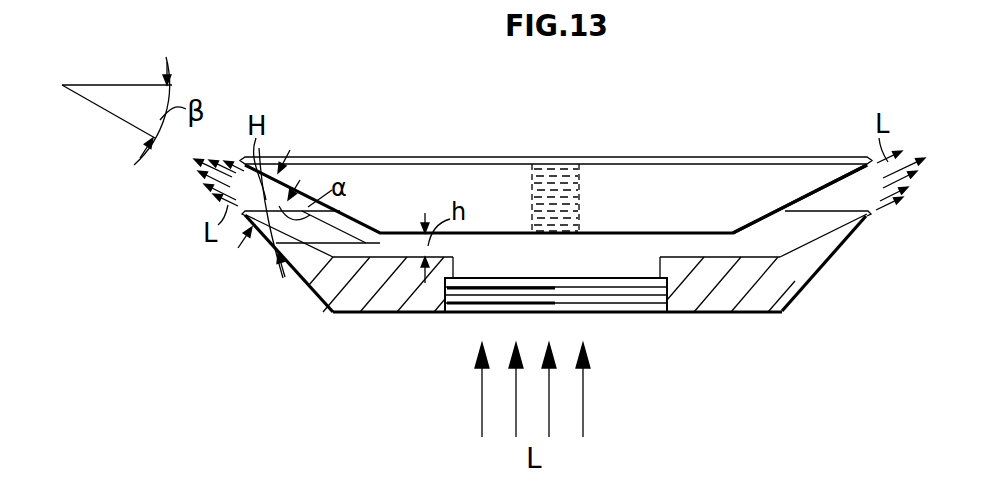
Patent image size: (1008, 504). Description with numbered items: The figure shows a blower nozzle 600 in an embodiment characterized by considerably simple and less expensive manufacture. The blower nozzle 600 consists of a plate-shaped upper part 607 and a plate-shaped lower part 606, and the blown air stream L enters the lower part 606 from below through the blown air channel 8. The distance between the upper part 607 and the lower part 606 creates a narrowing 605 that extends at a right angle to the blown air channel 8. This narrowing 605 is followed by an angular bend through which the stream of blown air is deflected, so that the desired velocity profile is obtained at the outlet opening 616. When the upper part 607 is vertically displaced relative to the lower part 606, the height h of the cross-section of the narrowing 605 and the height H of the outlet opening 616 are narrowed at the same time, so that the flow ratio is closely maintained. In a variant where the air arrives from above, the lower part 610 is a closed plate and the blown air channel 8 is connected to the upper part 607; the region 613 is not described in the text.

The blower nozzle 600 is at (812, 364).
The narrowing 605 is at (657, 240).
The upper part 607 is at (772, 183).
The light transmitting window 613 is at (577, 185).
The outlet opening 616 is at (856, 193).
The lower part 610 is at (785, 237).
The lower part 606 is at (737, 292).
The blown air channel 8 is at (660, 298).